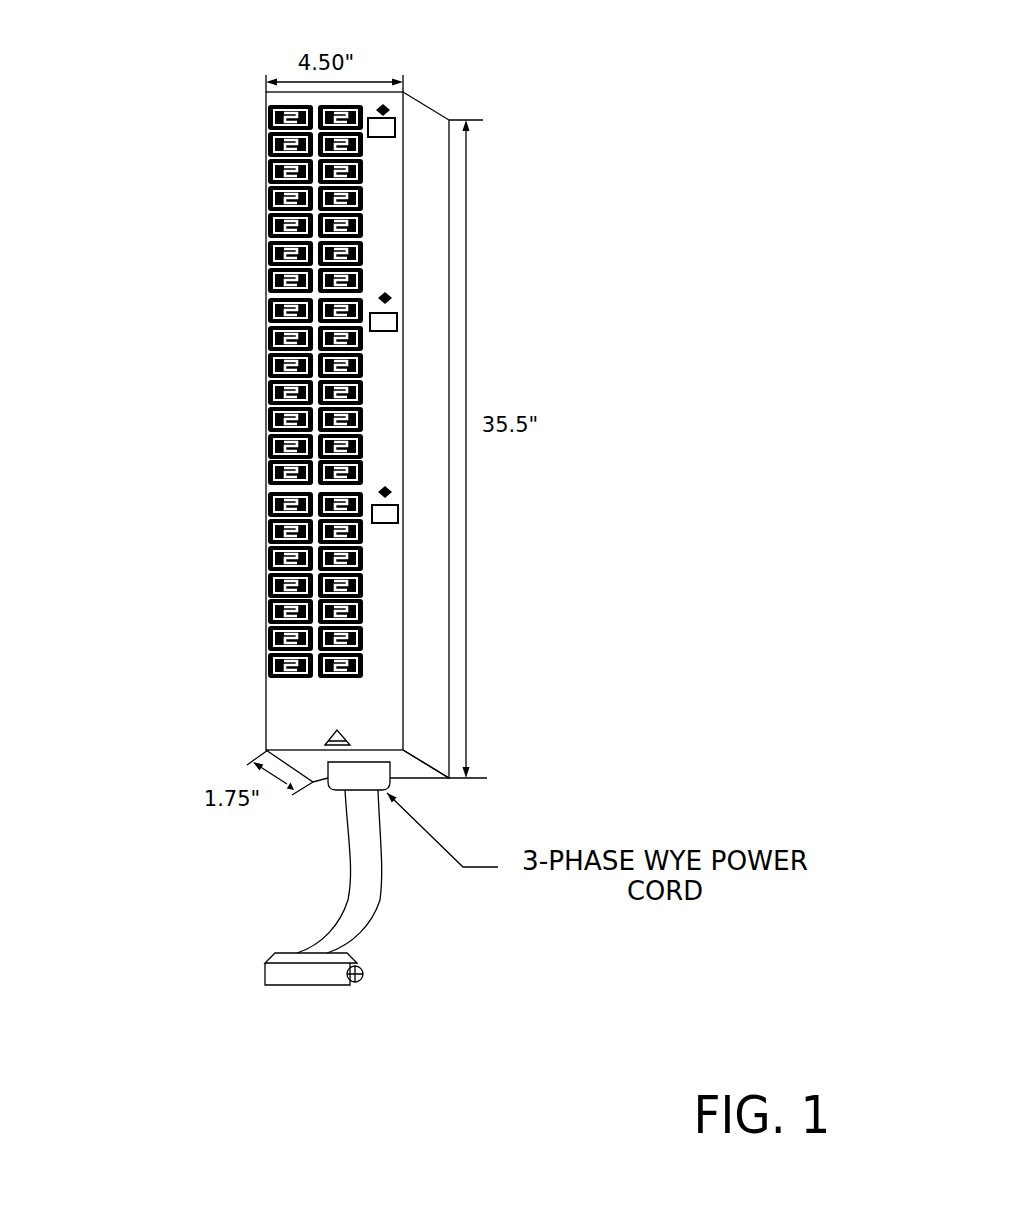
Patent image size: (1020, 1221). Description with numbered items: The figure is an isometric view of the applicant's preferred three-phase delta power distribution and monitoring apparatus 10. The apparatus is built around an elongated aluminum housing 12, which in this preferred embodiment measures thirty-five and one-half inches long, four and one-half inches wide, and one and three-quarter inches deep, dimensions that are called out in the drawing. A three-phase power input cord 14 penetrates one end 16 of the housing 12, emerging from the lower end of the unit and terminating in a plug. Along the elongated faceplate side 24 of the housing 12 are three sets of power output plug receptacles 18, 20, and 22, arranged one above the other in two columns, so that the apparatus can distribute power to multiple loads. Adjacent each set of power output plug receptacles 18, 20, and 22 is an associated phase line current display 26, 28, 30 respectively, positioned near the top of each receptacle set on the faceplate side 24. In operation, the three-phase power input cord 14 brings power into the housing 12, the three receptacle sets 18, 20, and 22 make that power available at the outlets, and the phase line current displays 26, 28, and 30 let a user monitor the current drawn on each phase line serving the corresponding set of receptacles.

The three-phase delta power distribution and monitoring apparatus 10 is at (458, 445).
The elongated aluminum housing 12 is at (427, 223).
The three-phase power input cord 14 is at (380, 900).
The end of the housing 16 is at (412, 768).
The set of power output plug receptacles 18 is at (216, 203).
The set of power output plug receptacles 20 is at (216, 388).
The set of power output plug receptacles 22 is at (225, 547).
The elongated faceplate side 24 is at (390, 615).
The phase line current display 26 is at (396, 120).
The phase line current display 28 is at (403, 322).
The phase line current display 30 is at (403, 515).